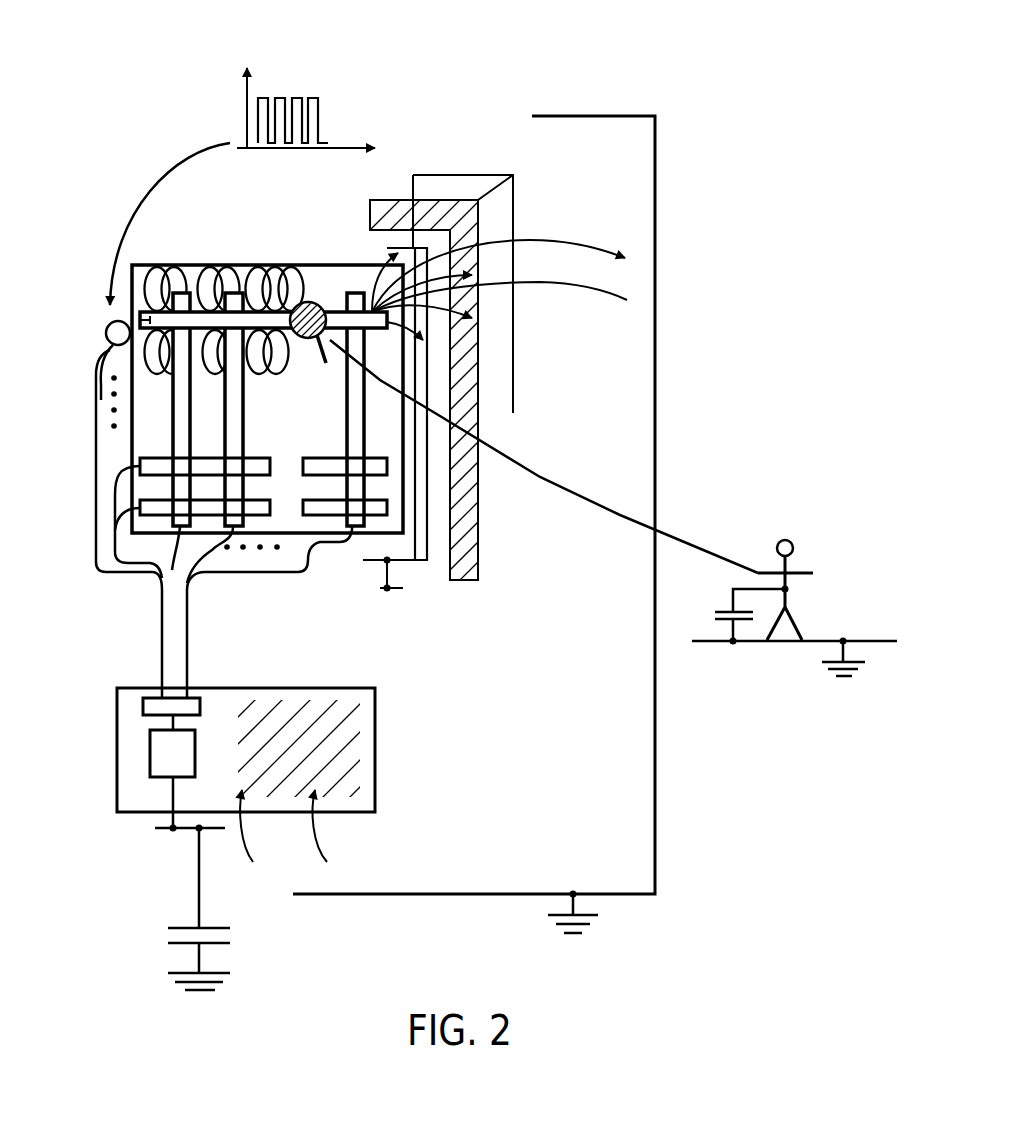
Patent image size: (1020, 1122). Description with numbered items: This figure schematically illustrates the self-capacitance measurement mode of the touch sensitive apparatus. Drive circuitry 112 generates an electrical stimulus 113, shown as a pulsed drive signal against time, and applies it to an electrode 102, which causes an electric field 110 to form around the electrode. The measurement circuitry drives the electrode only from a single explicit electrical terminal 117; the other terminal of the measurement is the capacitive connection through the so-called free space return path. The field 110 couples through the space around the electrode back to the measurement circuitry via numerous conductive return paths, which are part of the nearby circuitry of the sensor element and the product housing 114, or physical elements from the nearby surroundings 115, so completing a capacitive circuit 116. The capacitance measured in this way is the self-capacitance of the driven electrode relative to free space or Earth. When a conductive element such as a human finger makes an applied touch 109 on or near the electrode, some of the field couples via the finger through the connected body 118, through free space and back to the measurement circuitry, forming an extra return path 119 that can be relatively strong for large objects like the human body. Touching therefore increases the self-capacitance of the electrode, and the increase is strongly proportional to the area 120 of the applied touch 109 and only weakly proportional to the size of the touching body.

The electrode 102 is at (278, 310).
The applied touch 109 is at (327, 366).
The electric field 110 is at (249, 451).
The drive circuitry 112 is at (148, 755).
The electrical stimulus 113 is at (312, 78).
The product housing 114 is at (417, 247).
The nearby surroundings 115 is at (633, 460).
The capacitive circuit 116 is at (357, 763).
The single explicit electrical terminal 117 is at (150, 322).
The connected body 118 is at (795, 563).
The extra return path 119 is at (722, 627).
The area of the applied touch 120 is at (302, 340).